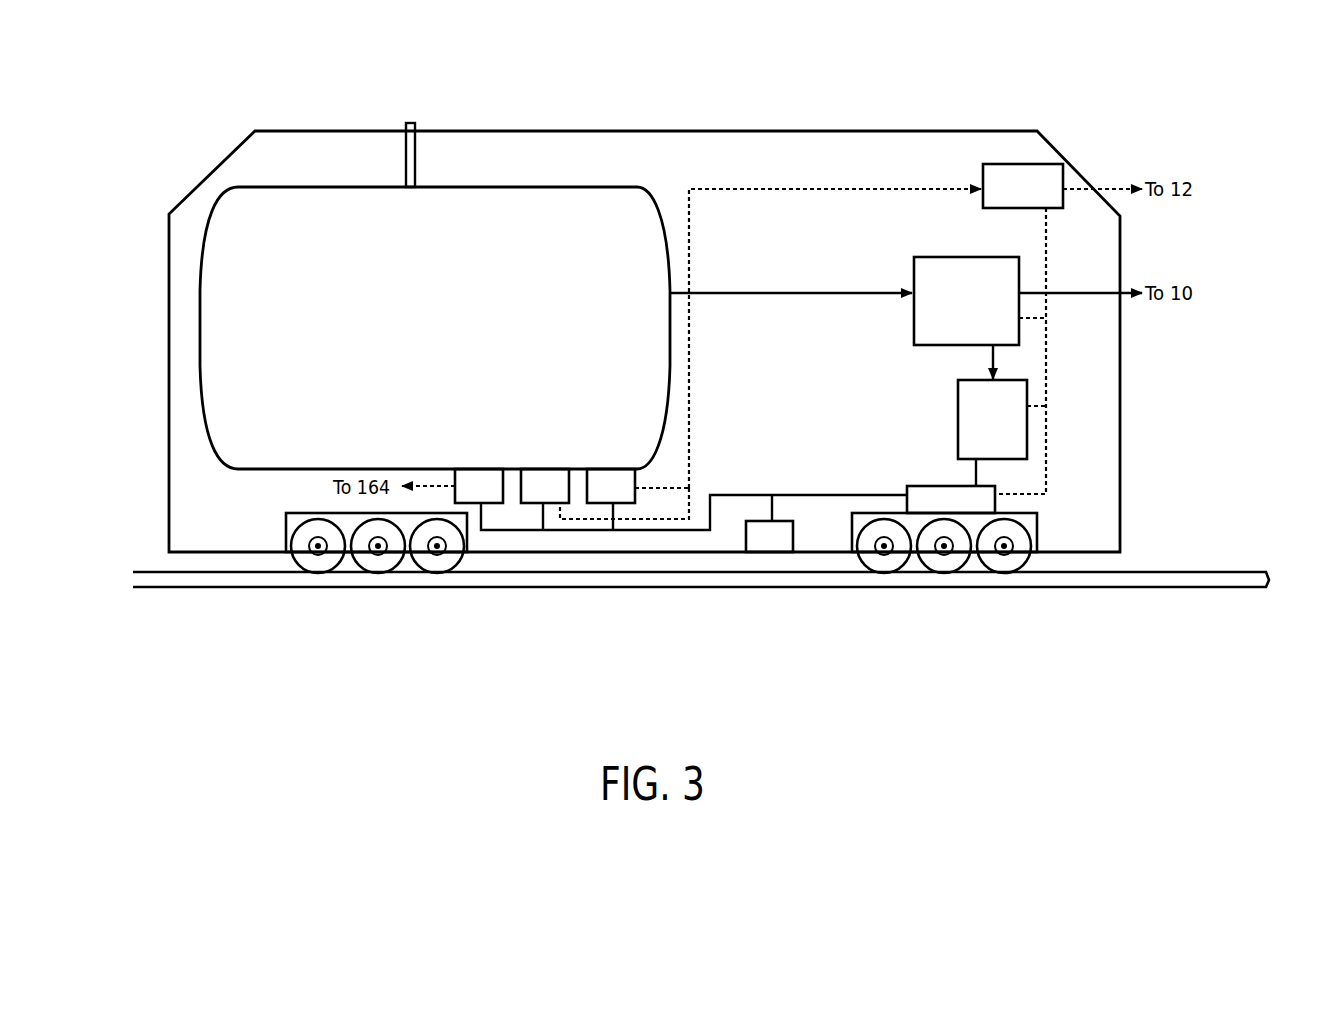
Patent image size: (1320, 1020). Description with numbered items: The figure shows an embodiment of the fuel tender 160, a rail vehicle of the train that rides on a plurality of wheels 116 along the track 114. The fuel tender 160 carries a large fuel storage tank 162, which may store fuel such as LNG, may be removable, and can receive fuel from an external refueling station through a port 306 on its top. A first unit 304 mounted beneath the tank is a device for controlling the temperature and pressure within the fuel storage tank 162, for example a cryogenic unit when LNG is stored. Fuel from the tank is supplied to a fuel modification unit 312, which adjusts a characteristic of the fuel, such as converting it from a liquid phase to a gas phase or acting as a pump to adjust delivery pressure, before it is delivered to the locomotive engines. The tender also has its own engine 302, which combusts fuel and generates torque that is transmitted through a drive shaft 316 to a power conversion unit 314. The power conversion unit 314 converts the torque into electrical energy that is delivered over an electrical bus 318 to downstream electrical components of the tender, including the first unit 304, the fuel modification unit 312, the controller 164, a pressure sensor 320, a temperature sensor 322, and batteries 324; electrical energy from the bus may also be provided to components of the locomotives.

The fuel tender 160 is at (305, 131).
The fuel storage tank 162 is at (443, 333).
The port 306 is at (443, 160).
The controller 164 is at (1038, 199).
The fuel modification unit 312 is at (981, 309).
The engine 302 is at (1007, 428).
The power conversion unit 314 is at (966, 510).
The drive shaft 316 is at (976, 486).
The first unit 304 is at (494, 498).
The pressure sensor 320 is at (560, 498).
The temperature sensor 322 is at (626, 498).
The electrical bus 318 is at (747, 495).
The batteries 324 is at (784, 548).
The wheels 116 is at (993, 563).
The rail 114 is at (1177, 587).